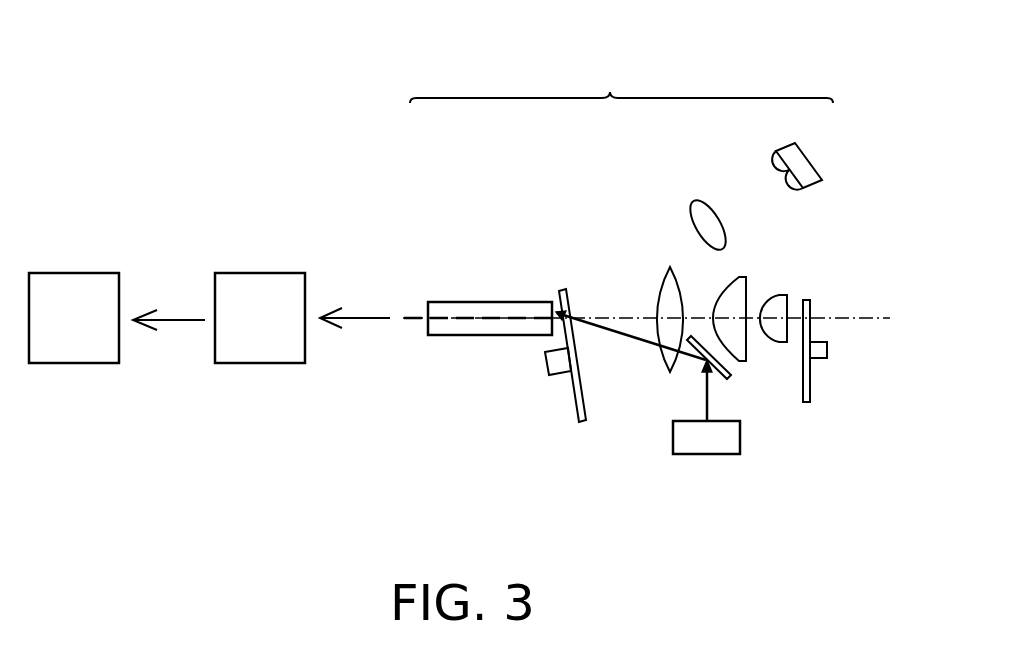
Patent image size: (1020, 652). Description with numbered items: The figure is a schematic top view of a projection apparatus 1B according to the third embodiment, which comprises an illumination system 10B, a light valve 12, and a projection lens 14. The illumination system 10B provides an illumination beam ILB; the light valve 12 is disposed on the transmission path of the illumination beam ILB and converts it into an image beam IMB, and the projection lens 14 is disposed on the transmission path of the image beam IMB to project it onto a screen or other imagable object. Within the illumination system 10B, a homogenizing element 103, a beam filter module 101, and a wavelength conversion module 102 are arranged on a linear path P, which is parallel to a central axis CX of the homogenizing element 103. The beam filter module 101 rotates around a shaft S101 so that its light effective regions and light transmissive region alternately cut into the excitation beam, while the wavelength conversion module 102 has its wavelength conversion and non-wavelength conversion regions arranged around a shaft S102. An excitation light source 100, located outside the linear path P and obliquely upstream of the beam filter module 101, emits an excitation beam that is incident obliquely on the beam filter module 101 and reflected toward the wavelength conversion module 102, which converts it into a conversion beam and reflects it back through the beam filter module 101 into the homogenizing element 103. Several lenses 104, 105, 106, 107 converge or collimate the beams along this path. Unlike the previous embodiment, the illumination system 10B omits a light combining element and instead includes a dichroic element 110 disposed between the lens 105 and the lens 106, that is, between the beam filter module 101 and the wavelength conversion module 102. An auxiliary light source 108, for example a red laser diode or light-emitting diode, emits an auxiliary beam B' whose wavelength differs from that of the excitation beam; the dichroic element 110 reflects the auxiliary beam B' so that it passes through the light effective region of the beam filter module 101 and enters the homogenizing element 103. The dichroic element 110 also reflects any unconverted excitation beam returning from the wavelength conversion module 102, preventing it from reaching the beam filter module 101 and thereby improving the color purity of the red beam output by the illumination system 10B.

The projection lens 14 is at (88, 333).
The light valve 12 is at (274, 333).
The image beam IMB is at (180, 322).
The illumination beam ILB is at (363, 322).
The linear path P is at (882, 315).
The central axis CX is at (415, 312).
The homogenizing element 103 is at (488, 300).
The beam filter module 101 is at (586, 422).
The shaft S101 is at (551, 362).
The lens 104 is at (695, 205).
The lens 105 is at (656, 283).
The lens 106 is at (750, 283).
The dichroic element 110 is at (704, 335).
The lens 107 is at (780, 345).
The wavelength conversion module 102 is at (807, 405).
The shaft S102 is at (827, 350).
The excitation light source 100 is at (805, 157).
The auxiliary light source 108 is at (708, 455).
The auxiliary beam B' is at (680, 399).
The illumination system 10B is at (621, 79).
The projection apparatus 1B is at (917, 538).